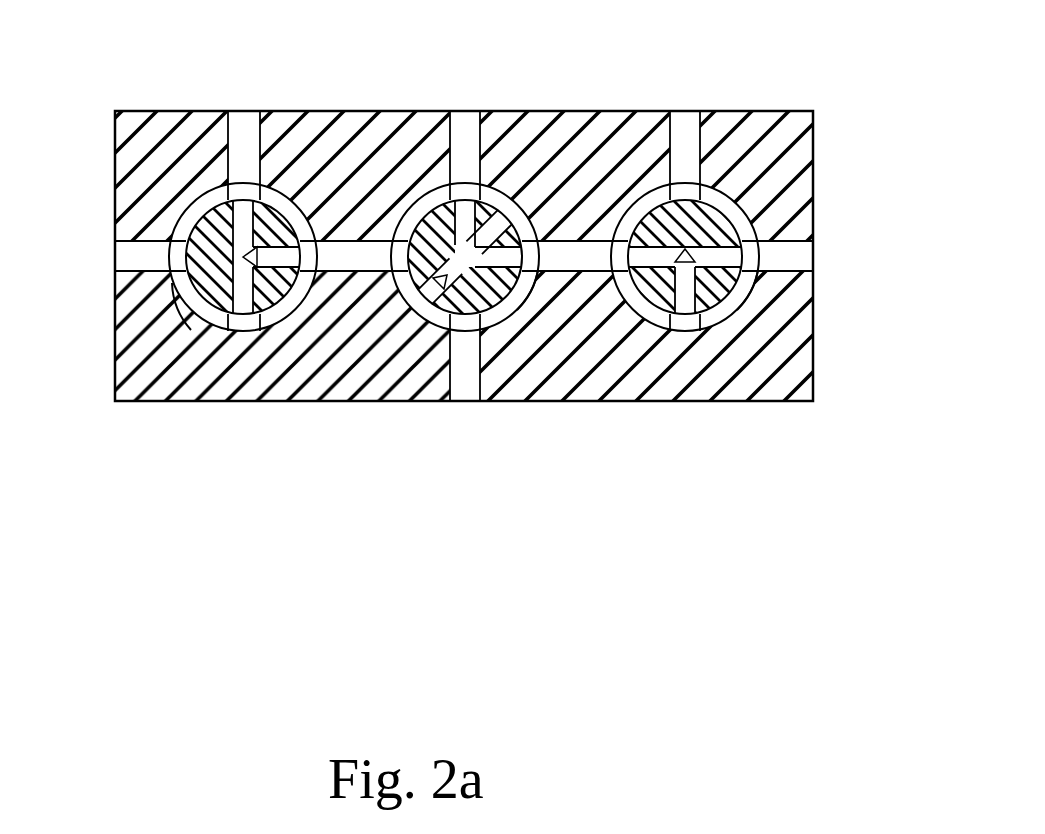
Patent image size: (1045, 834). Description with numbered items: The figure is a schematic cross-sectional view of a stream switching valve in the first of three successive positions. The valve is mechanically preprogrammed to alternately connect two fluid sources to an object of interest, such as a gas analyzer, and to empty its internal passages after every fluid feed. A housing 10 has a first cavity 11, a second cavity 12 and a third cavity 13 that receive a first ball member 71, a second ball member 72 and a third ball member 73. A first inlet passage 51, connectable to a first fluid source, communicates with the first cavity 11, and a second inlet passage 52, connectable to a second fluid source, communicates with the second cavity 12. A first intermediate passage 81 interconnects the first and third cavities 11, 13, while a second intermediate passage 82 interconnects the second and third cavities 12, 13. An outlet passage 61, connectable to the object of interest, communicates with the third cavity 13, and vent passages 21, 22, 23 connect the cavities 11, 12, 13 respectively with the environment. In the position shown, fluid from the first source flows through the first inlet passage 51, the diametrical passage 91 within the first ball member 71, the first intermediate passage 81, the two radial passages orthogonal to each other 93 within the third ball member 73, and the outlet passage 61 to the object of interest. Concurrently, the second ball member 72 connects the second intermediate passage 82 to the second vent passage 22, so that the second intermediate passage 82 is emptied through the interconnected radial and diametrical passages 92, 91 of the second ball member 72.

The housing 10 is at (805, 133).
The first cavity 11 is at (647, 197).
The second cavity 12 is at (197, 200).
The third cavity 13 is at (440, 200).
The first vent passage 21 is at (688, 130).
The second vent passage 22 is at (243, 137).
The third vent passage 23 is at (465, 378).
The first inlet passage 51 is at (790, 262).
The second inlet passage 52 is at (135, 258).
The outlet passage 61 is at (467, 133).
The first ball member 71 is at (733, 317).
The second ball member 72 is at (180, 320).
The third ball member 73 is at (490, 293).
The first intermediate passage 81 is at (573, 257).
The second intermediate passage 82 is at (347, 253).
The diametrical passage 91 is at (243, 300).
The radial passage 92 is at (262, 262).
The two radial passages orthogonal to each other 93 is at (450, 210).